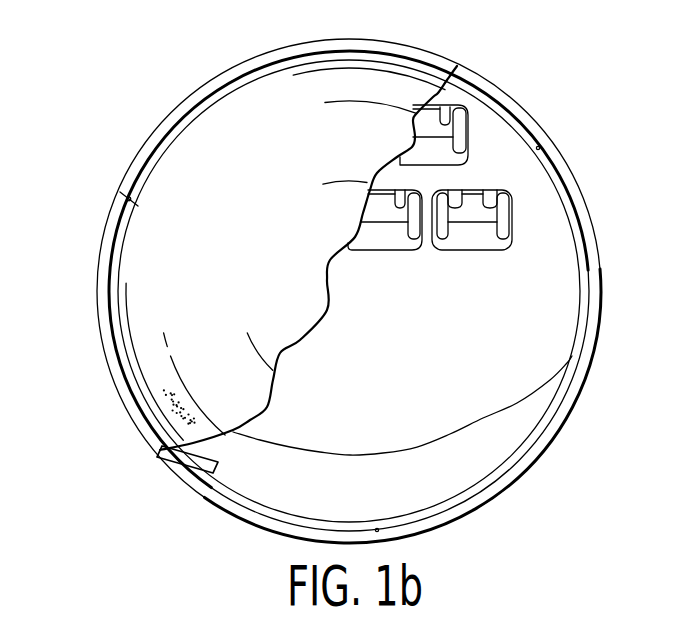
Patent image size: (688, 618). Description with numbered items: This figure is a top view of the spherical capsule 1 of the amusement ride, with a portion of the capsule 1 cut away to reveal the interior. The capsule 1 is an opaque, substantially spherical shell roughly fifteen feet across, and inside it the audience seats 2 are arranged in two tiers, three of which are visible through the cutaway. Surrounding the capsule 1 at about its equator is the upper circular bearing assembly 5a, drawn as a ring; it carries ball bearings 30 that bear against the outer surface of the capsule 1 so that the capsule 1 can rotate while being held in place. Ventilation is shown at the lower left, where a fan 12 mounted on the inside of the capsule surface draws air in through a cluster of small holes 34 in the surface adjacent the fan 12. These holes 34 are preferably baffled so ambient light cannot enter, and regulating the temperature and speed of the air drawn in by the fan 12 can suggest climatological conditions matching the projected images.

The spherical capsule 1 is at (383, 60).
The upper circular bearing assembly 5a is at (223, 74).
The audience seats 2 is at (438, 110).
The ball bearings 30 is at (131, 199).
The small holes 34 is at (166, 388).
The fan 12 is at (172, 452).